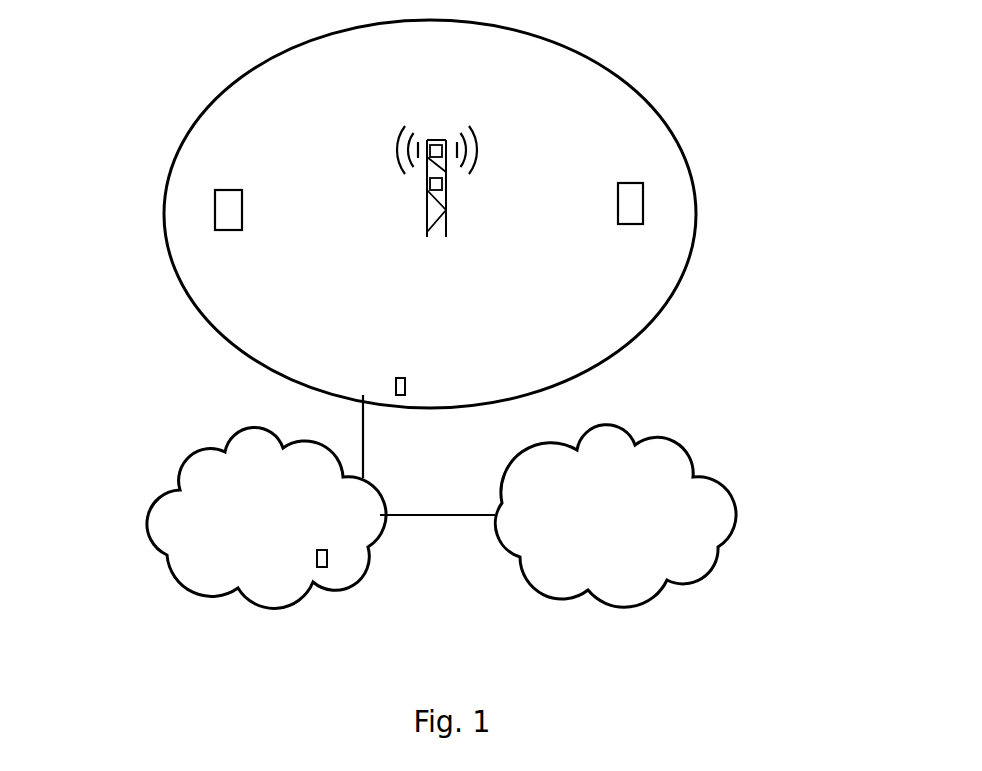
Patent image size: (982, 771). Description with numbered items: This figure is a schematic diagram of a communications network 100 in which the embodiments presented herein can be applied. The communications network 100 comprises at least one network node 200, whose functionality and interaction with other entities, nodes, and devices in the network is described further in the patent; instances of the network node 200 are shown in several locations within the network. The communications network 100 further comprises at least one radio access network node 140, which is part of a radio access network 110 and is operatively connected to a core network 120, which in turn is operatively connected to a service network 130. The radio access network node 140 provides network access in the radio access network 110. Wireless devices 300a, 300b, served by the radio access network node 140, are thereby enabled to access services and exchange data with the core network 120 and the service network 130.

The communications network 100 is at (745, 140).
The radio access network 110 is at (215, 327).
The core network 120 is at (189, 486).
The service network 130 is at (588, 482).
The radio access network node 140 is at (447, 216).
The network node 200 is at (428, 188).
The wireless device 300a is at (225, 230).
The wireless device 300b is at (630, 224).